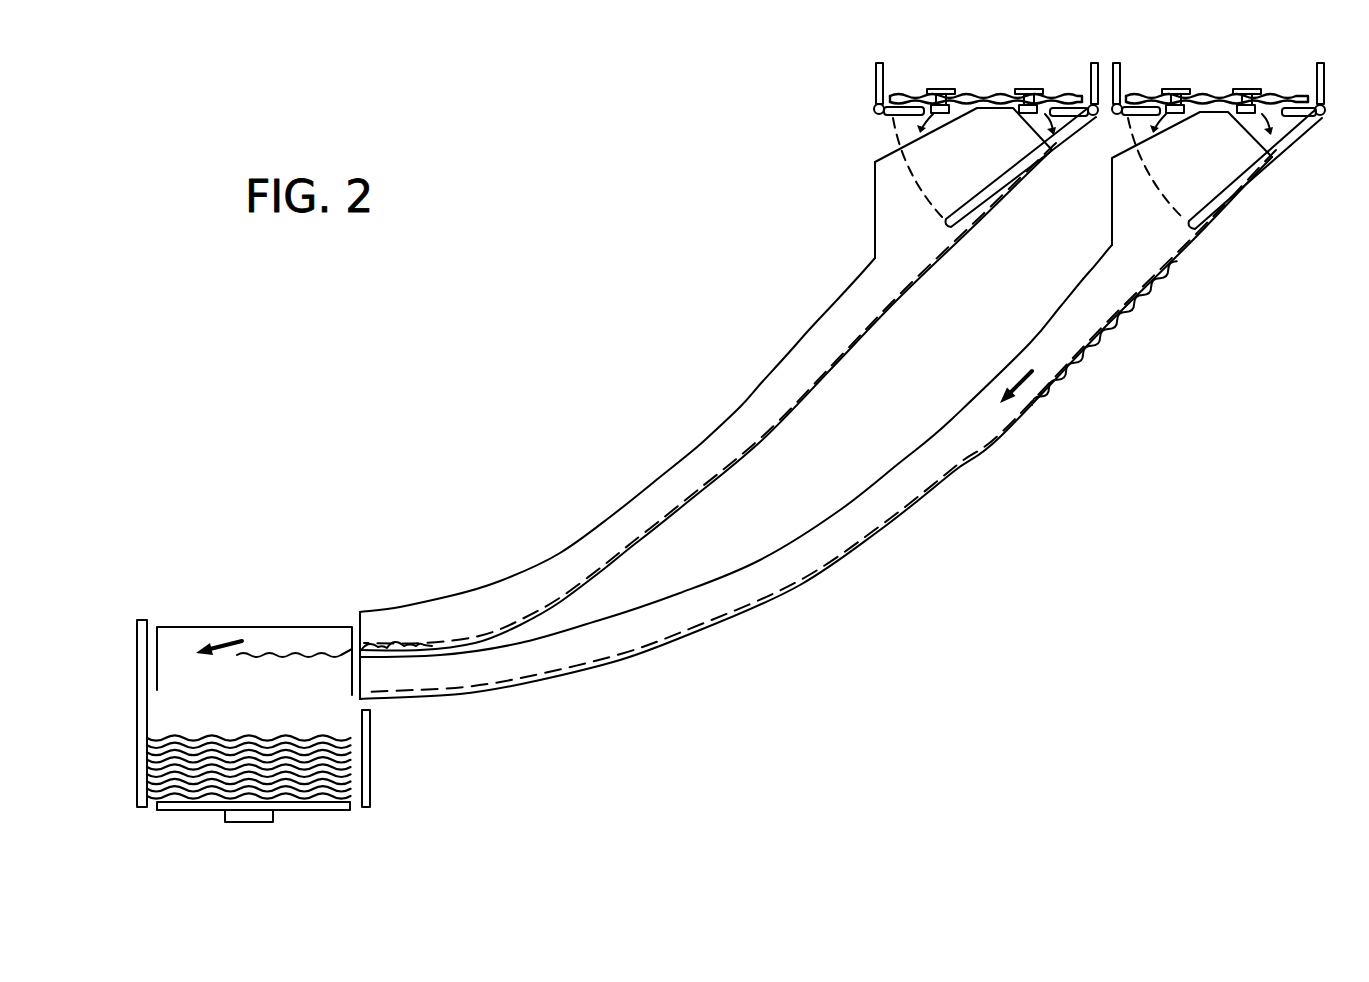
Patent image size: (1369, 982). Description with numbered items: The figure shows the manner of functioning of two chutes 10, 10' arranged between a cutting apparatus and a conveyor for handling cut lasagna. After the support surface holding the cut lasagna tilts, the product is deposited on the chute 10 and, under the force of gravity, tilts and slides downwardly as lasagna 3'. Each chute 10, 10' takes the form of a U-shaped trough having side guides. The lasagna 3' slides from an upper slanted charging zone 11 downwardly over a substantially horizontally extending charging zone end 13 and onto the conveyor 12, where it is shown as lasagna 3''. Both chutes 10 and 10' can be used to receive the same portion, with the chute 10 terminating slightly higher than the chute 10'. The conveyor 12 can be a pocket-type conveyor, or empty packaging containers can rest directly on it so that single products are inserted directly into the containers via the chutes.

The lasagna 3' is at (977, 333).
The lasagna 3'' is at (274, 615).
The chute 10 is at (708, 403).
The chute 10' is at (816, 384).
The upper slanted charging zone 11 is at (1190, 252).
The conveyor 12 is at (293, 810).
The charging zone end 13 is at (428, 700).